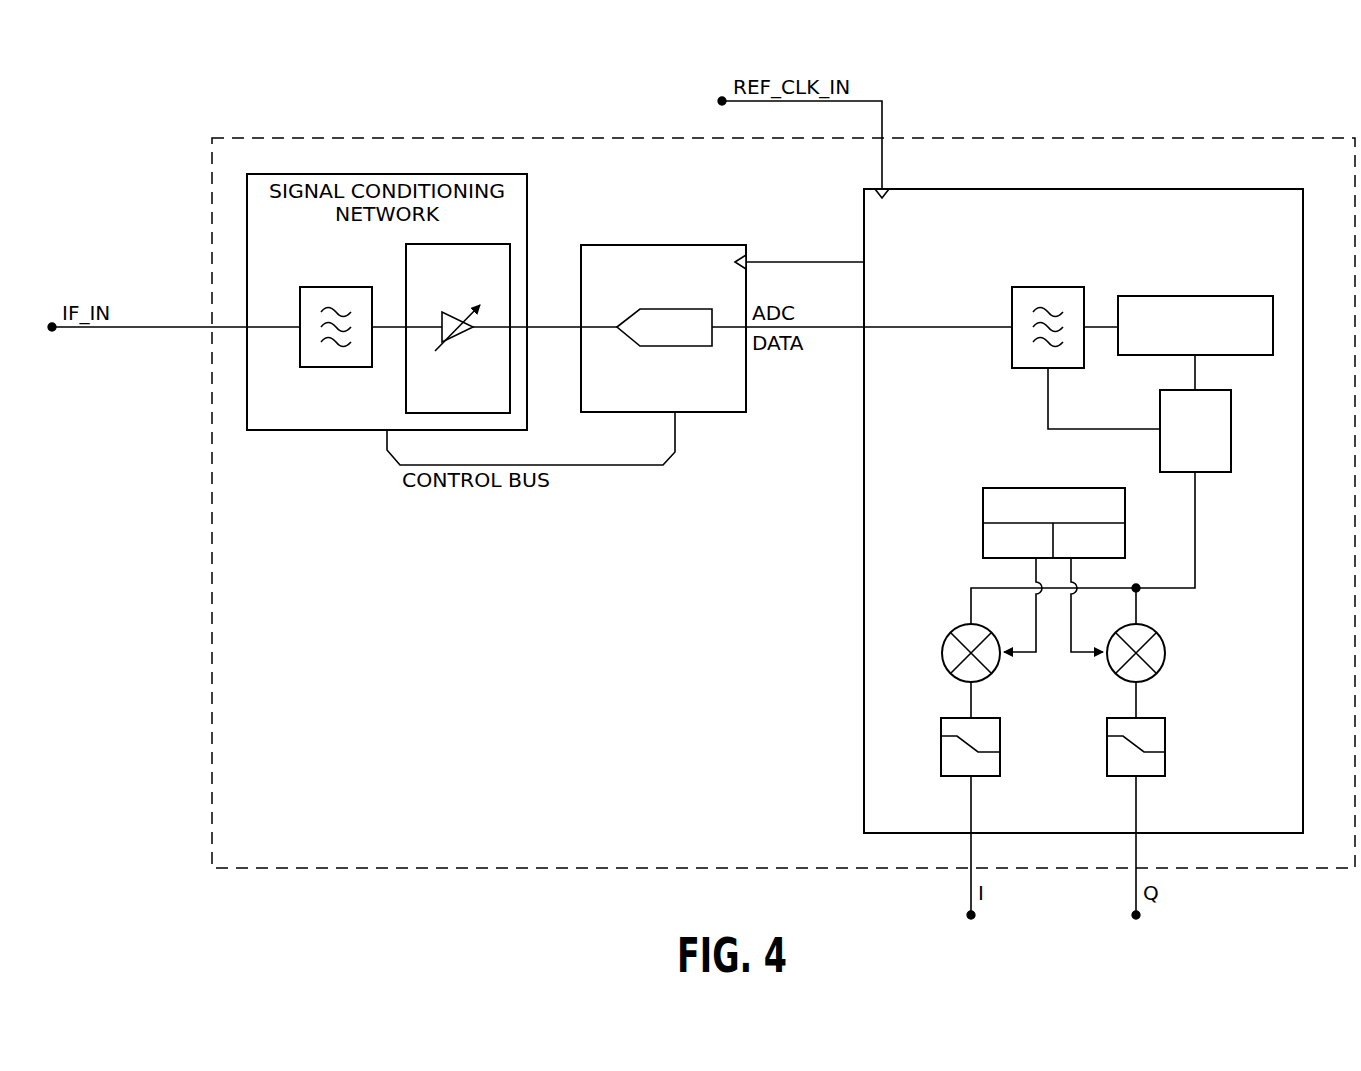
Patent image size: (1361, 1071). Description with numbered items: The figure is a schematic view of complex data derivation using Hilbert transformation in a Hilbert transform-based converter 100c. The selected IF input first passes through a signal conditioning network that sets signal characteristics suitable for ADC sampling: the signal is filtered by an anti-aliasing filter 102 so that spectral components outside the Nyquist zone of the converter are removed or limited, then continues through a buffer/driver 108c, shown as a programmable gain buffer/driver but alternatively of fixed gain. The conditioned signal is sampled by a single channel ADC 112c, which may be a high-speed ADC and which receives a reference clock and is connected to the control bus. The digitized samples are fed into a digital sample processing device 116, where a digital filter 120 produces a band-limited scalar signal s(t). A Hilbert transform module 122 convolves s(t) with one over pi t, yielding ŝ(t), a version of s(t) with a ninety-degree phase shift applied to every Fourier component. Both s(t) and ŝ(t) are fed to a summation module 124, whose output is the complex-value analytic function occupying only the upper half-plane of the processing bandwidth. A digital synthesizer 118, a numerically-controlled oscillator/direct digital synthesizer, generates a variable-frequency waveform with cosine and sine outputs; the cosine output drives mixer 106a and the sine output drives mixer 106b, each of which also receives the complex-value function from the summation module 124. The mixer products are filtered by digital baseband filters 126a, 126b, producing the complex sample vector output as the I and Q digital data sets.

The Hilbert transform-based converter 100c is at (180, 97).
The anti-aliasing filter 102 is at (312, 287).
The buffer/driver 108c is at (462, 338).
The single channel ADC 112c is at (647, 306).
The digital sample processing device 116 is at (1303, 224).
The digital synthesizer 118 is at (996, 488).
The digital filter 120 is at (1023, 287).
The Hilbert transform module 122 is at (1236, 296).
The summation module 124 is at (1231, 430).
The mixer 106a is at (951, 633).
The mixer 106b is at (1156, 633).
The digital baseband filter 126a is at (958, 776).
The digital baseband filter 126b is at (1148, 776).